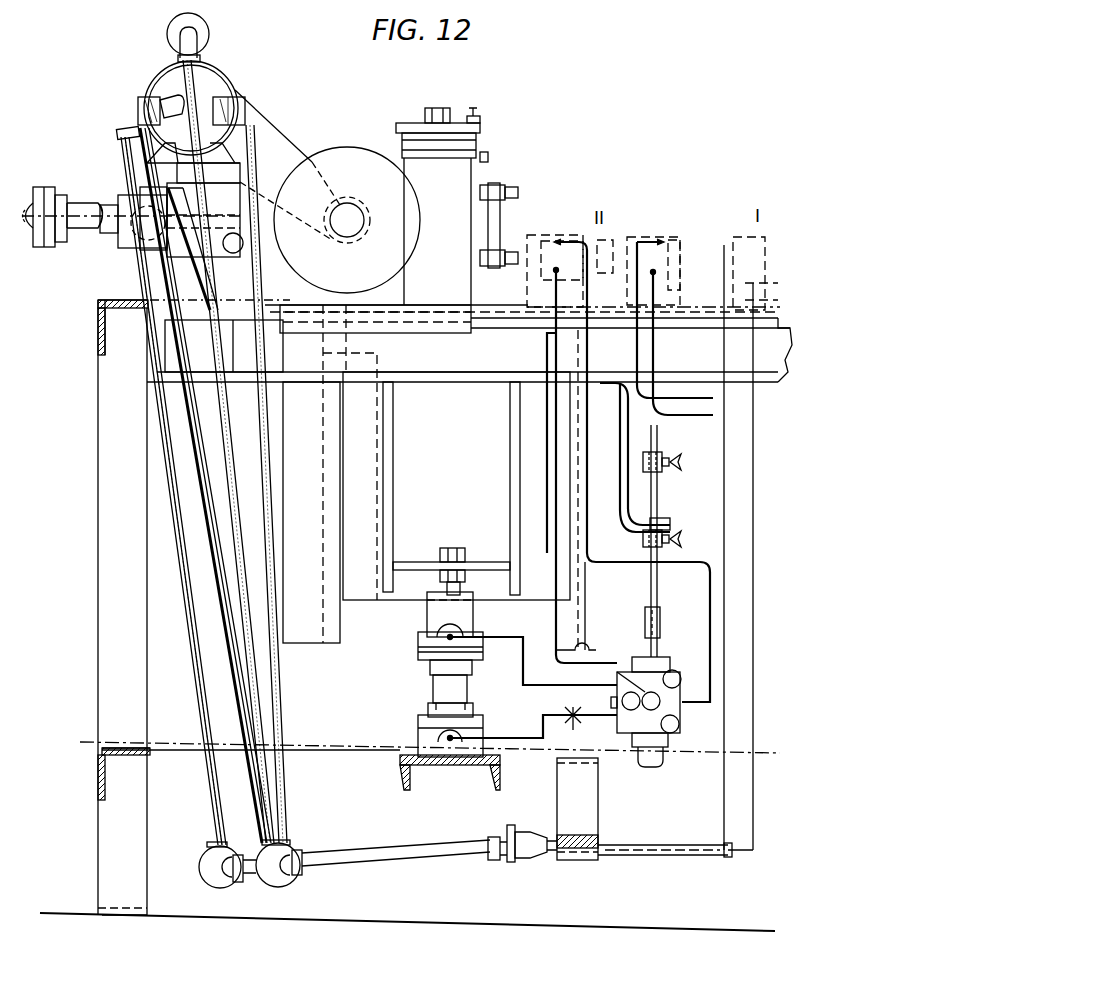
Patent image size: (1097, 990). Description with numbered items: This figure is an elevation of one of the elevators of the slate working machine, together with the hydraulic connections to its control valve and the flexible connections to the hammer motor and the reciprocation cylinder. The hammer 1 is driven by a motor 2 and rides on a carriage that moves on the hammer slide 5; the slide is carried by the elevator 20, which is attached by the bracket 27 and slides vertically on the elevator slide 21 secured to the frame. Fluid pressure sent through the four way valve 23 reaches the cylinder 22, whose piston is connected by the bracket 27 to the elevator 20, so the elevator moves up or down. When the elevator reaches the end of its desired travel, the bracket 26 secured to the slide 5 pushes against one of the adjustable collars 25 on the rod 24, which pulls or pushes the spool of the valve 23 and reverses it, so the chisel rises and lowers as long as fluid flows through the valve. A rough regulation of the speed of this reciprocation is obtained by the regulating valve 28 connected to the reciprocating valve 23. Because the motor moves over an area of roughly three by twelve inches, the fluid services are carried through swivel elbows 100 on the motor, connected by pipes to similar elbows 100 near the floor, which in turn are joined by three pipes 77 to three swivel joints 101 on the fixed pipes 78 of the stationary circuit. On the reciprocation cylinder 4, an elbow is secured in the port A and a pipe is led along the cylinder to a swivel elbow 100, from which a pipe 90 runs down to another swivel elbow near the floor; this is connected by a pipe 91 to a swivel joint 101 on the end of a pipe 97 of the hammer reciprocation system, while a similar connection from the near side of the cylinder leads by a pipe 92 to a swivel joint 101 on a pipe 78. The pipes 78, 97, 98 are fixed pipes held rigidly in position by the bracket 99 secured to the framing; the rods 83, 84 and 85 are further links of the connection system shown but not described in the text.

The hammer 1 is at (337, 157).
The motor 2 is at (208, 82).
The cylinder 4 is at (78, 200).
The hammer slide 5 is at (157, 342).
The elevator 20 is at (478, 508).
The elevator slide 21 is at (321, 643).
The cylinder 22 is at (472, 692).
The four way valve 23 is at (663, 658).
The rod 24 is at (660, 597).
The adjustable collar 25 is at (665, 456).
The bracket 26 is at (635, 497).
The bracket 27 is at (400, 564).
The regulating valve 28 is at (575, 727).
The pipe 77 is at (357, 849).
The pipe 78 is at (657, 868).
The rod 83 is at (273, 473).
The rod 84 is at (205, 500).
The rod 85 is at (226, 426).
The pipe 90 is at (171, 486).
The pipe 91 is at (182, 548).
The pipe 92 is at (258, 878).
The pipe 97 is at (657, 868).
The pipe 98 is at (668, 856).
The bracket 99 is at (600, 810).
The swivel elbow 100 is at (143, 97).
The swivel joint 101 is at (504, 835).
The port A is at (30, 210).